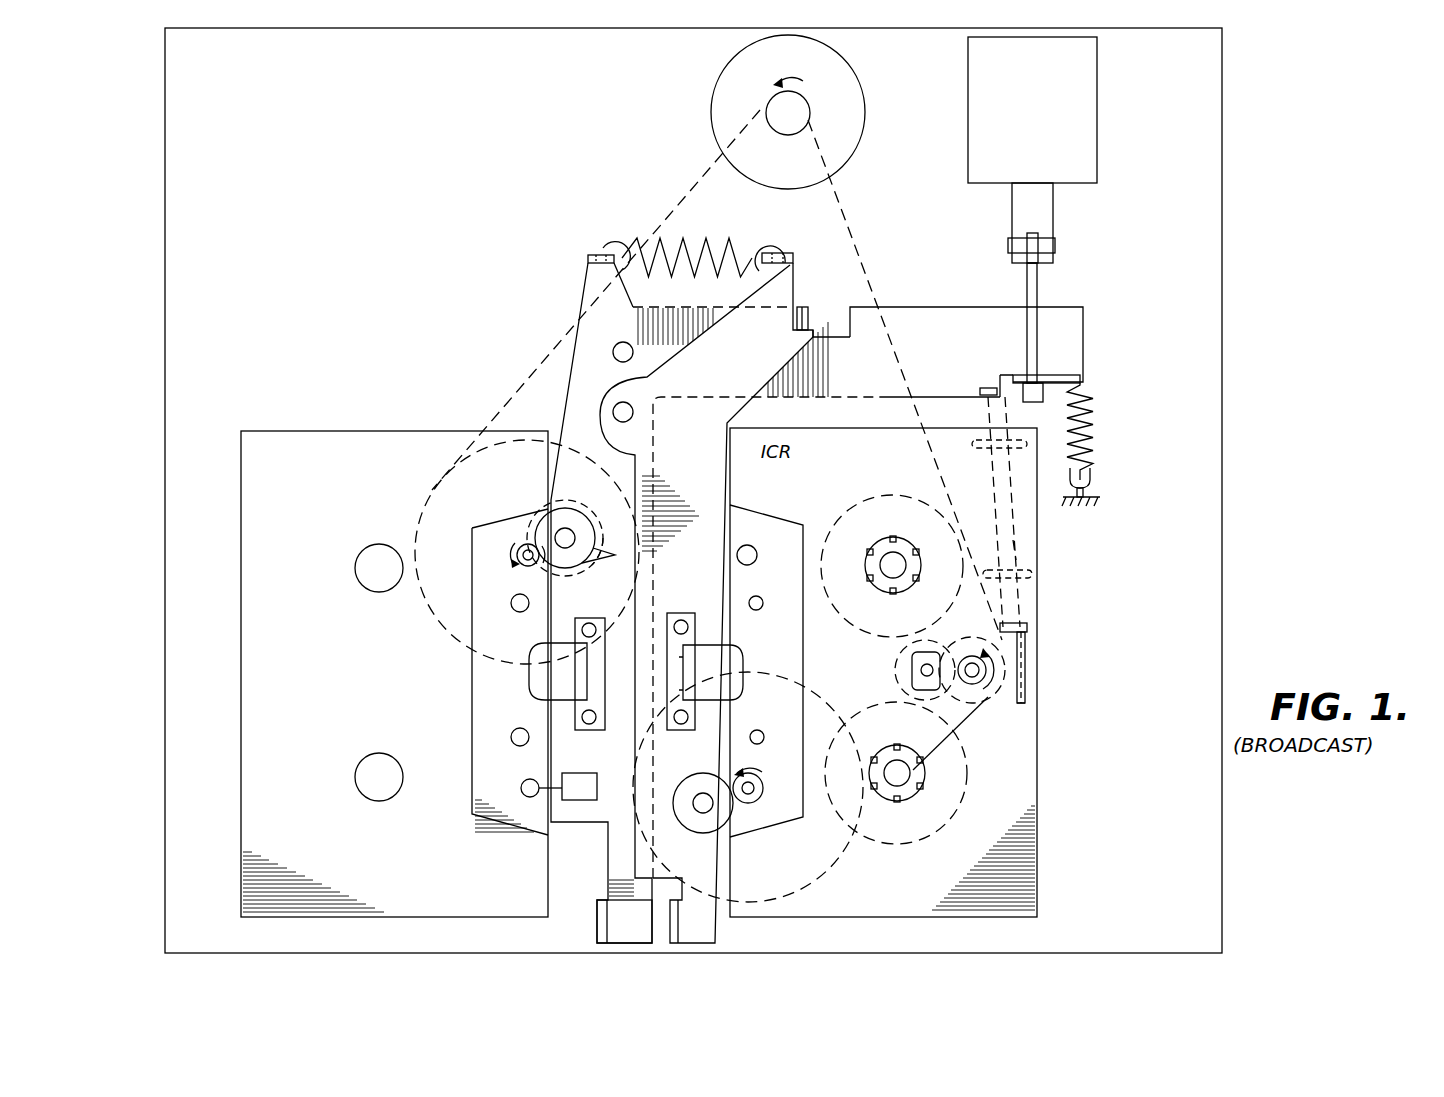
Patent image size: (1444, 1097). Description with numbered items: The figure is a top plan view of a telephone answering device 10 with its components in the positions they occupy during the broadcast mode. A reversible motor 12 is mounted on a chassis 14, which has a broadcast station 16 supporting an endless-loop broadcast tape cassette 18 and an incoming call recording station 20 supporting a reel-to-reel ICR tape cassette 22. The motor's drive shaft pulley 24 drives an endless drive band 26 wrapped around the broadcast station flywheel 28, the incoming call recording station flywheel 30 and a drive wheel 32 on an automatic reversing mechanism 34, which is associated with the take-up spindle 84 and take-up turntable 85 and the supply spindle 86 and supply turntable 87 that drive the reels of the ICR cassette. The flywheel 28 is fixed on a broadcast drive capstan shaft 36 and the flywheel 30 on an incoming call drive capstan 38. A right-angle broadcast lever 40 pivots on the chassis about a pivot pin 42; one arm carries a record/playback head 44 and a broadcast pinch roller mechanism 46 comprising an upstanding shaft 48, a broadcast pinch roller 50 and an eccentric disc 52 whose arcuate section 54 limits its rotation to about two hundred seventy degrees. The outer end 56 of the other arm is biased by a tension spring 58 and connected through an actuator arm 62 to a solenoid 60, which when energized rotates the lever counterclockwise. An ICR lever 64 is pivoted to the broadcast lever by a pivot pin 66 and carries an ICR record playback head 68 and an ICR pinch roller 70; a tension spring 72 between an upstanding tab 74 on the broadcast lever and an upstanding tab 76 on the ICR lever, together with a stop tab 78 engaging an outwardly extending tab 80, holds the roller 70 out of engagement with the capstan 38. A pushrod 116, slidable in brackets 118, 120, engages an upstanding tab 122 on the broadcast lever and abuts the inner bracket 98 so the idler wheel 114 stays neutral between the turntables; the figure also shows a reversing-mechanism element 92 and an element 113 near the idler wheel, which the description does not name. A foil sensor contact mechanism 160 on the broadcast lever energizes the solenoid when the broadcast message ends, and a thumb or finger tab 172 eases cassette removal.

The telephone answering device 10 is at (1256, 139).
The reversible motor 12 is at (858, 80).
The chassis 14 is at (1213, 92).
The broadcast station 16 is at (208, 384).
The broadcast tape cassette 18 is at (262, 544).
The incoming call recording (ICR) station 20 is at (1195, 376).
The incoming call recording (ICR) tape cassette 22 is at (1027, 515).
The drive shaft pulley 24 is at (808, 114).
The drive band 26 is at (680, 204).
The broadcast station flywheel 28 is at (436, 508).
The incoming call recording station flywheel 30 is at (817, 857).
The drive wheel 32 is at (1002, 663).
The automatic reversing mechanism 34 is at (1036, 677).
The broadcast drive capstan shaft 36 is at (527, 548).
The incoming call drive capstan 38 is at (748, 803).
The broadcast lever 40 is at (586, 281).
The pivot pin 42 is at (613, 350).
The record/playback head 44 is at (528, 678).
The broadcast pinch roller mechanism 46 is at (569, 476).
The upstanding shaft 48 is at (568, 530).
The broadcast pinch roller 50 is at (634, 534).
The eccentric disc 52 is at (585, 526).
The arcuate section 54 is at (596, 570).
The outer end 56 is at (1080, 323).
The tension spring 58 is at (1094, 434).
The solenoid 60 is at (968, 143).
The actuator arm 62 is at (1040, 287).
The ICR lever 64 is at (785, 279).
The pivot pin 66 is at (613, 411).
The ICR record playback head 68 is at (705, 645).
The ICR pinch roller 70 is at (701, 828).
The tension spring 72 is at (682, 246).
The upstanding tab 74 is at (596, 254).
The upstanding tab 76 is at (785, 253).
The upstanding tab 78 is at (806, 308).
The outwardly extending tab 80 is at (813, 338).
The take-up spindle 84 is at (912, 779).
The take-up turntable 85 is at (948, 773).
The supply spindle 86 is at (893, 537).
The supply turntable 87 is at (857, 527).
The rotation arrow 92 is at (981, 700).
The inner bracket 98 is at (1025, 700).
The pressure roller 113 is at (912, 672).
The idler wheel 114 is at (912, 650).
The pushrod 116 is at (1018, 546).
The bracket 118 is at (1033, 576).
The bracket 120 is at (976, 450).
The upstanding tab 122 is at (988, 388).
The foil sensor contact mechanism 160 is at (588, 803).
The thumb or finger tab 172 is at (597, 932).